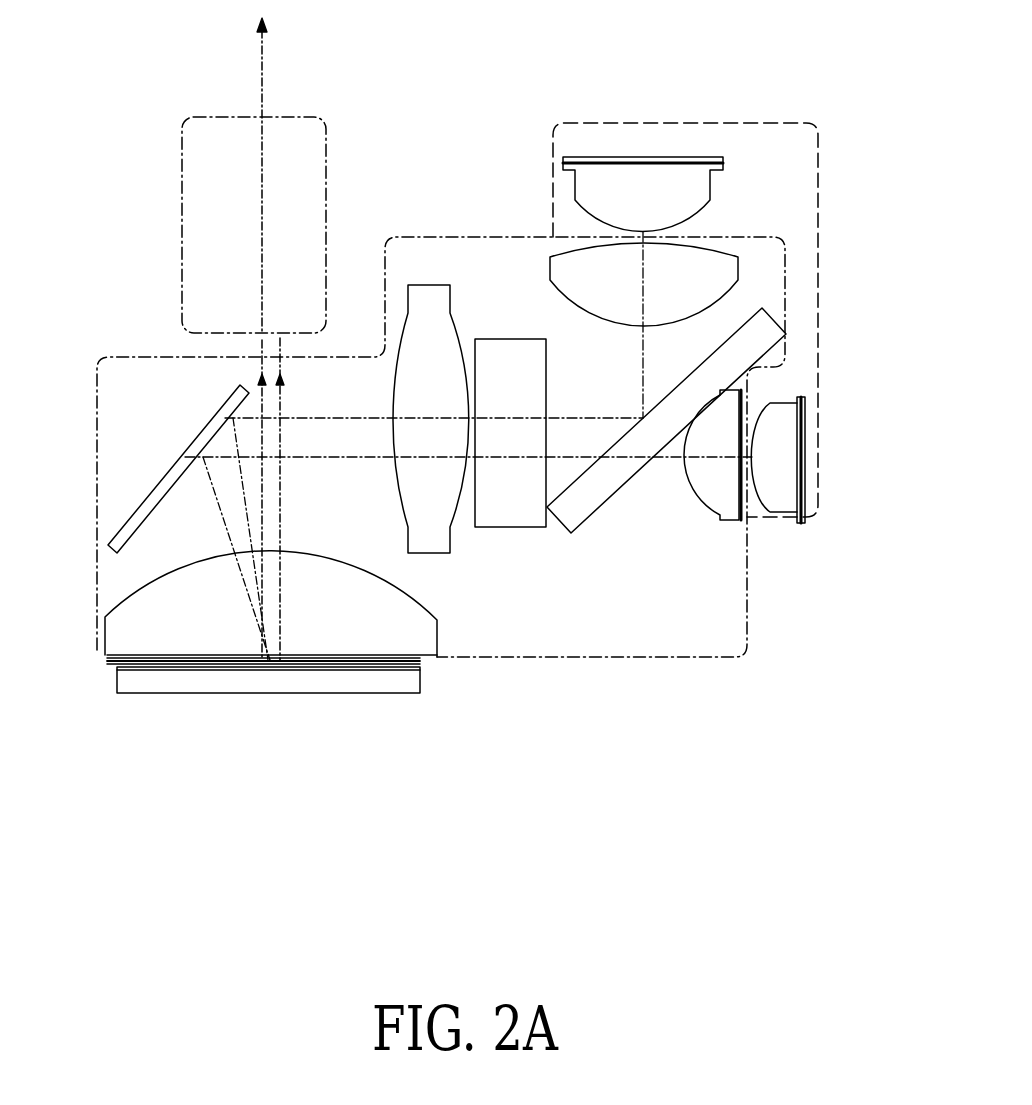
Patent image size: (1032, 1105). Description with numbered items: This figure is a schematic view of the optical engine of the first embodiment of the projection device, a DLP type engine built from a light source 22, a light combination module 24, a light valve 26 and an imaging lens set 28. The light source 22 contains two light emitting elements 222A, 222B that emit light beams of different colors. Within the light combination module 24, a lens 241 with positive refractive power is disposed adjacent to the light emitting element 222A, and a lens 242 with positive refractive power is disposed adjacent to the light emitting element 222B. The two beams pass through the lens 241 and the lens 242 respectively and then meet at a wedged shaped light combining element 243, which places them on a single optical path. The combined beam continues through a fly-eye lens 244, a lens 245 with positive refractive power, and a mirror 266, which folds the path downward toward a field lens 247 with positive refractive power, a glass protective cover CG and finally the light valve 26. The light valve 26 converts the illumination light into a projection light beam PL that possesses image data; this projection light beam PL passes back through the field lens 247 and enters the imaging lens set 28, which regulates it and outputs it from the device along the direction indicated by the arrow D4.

The light source 22 is at (820, 168).
The light emitting element 222A is at (575, 192).
The light emitting element 222B is at (807, 423).
The light combination module 24 is at (748, 636).
The lens 241 is at (740, 270).
The lens 242 is at (735, 524).
The wedged shaped light combining element 243 is at (600, 522).
The fly-eye lens 244 is at (500, 529).
The lens 245 is at (447, 556).
The field lens 247 is at (105, 616).
The mirror 266 is at (172, 462).
The light valve 26 is at (117, 692).
The glass protective cover CG is at (107, 659).
The imaging lens set 28 is at (328, 140).
The light emitting direction D4 is at (264, 80).
The projection light beam PL is at (284, 390).